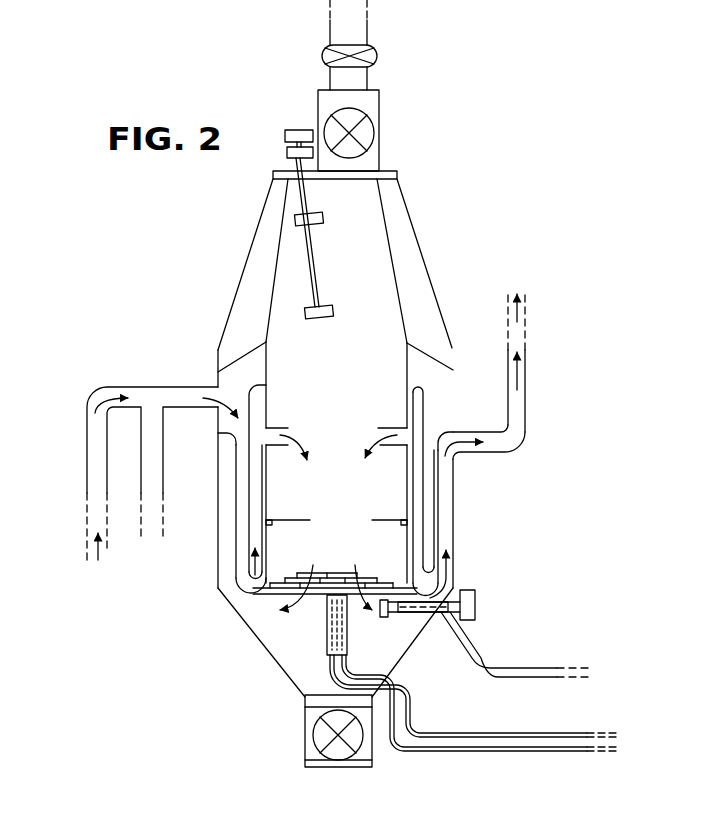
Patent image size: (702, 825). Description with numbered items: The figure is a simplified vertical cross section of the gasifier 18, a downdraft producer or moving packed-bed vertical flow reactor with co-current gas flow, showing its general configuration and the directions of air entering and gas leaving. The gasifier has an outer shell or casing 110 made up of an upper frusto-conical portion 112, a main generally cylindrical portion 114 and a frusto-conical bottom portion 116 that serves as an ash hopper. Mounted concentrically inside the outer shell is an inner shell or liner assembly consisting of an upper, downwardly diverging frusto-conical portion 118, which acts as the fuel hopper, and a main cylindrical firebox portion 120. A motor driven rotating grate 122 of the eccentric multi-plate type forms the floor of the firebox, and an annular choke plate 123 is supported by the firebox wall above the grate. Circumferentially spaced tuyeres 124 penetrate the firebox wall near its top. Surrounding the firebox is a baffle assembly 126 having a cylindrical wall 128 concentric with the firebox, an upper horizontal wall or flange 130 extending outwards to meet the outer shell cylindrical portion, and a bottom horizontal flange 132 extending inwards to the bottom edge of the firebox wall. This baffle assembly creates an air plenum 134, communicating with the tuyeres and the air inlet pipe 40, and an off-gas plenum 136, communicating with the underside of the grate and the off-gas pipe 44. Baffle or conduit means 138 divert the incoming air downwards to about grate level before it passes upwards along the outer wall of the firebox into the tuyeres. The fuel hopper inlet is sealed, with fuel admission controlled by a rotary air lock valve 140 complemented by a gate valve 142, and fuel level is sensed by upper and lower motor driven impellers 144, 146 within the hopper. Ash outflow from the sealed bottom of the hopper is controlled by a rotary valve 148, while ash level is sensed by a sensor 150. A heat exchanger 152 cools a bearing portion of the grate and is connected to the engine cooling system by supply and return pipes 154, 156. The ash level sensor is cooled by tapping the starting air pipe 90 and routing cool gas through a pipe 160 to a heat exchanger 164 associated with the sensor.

The outer shell 110 is at (192, 258).
The upper frusto-conical portion 112 is at (262, 218).
The gasifier 18 is at (233, 297).
The upper frusto-conical portion 118 is at (393, 248).
The air plenum 134 is at (240, 377).
The main cylindrical portion 114 is at (217, 365).
The frusto-conical bottom portion 116 is at (265, 655).
The firebox portion 120 is at (407, 475).
The rotating grate 122 is at (335, 567).
The annular choke plate 123 is at (285, 517).
The tuyeres 124 is at (280, 427).
The baffle assembly 126 is at (222, 570).
The cylindrical wall 128 is at (235, 488).
The upper horizontal wall 130 is at (220, 450).
The bottom horizontal flange 132 is at (258, 596).
The off-gas plenum 136 is at (225, 537).
The baffle means 138 is at (427, 413).
The rotary air lock valve 140 is at (380, 110).
The gate valve 142 is at (377, 53).
The upper motor driven impeller 144 is at (323, 217).
The lower motor driven impeller 146 is at (333, 308).
The rotary valve 148 is at (305, 732).
The ash level sensor 150 is at (387, 615).
The heat exchanger 152 is at (327, 630).
The supply pipe 154 is at (490, 715).
The return pipe 156 is at (547, 748).
The pipe 160 is at (532, 668).
The heat exchanger 164 is at (415, 612).
The air inlet pipe 40 is at (103, 390).
The off-gas pipe 44 is at (528, 385).
The starting air pipe 90 is at (140, 452).